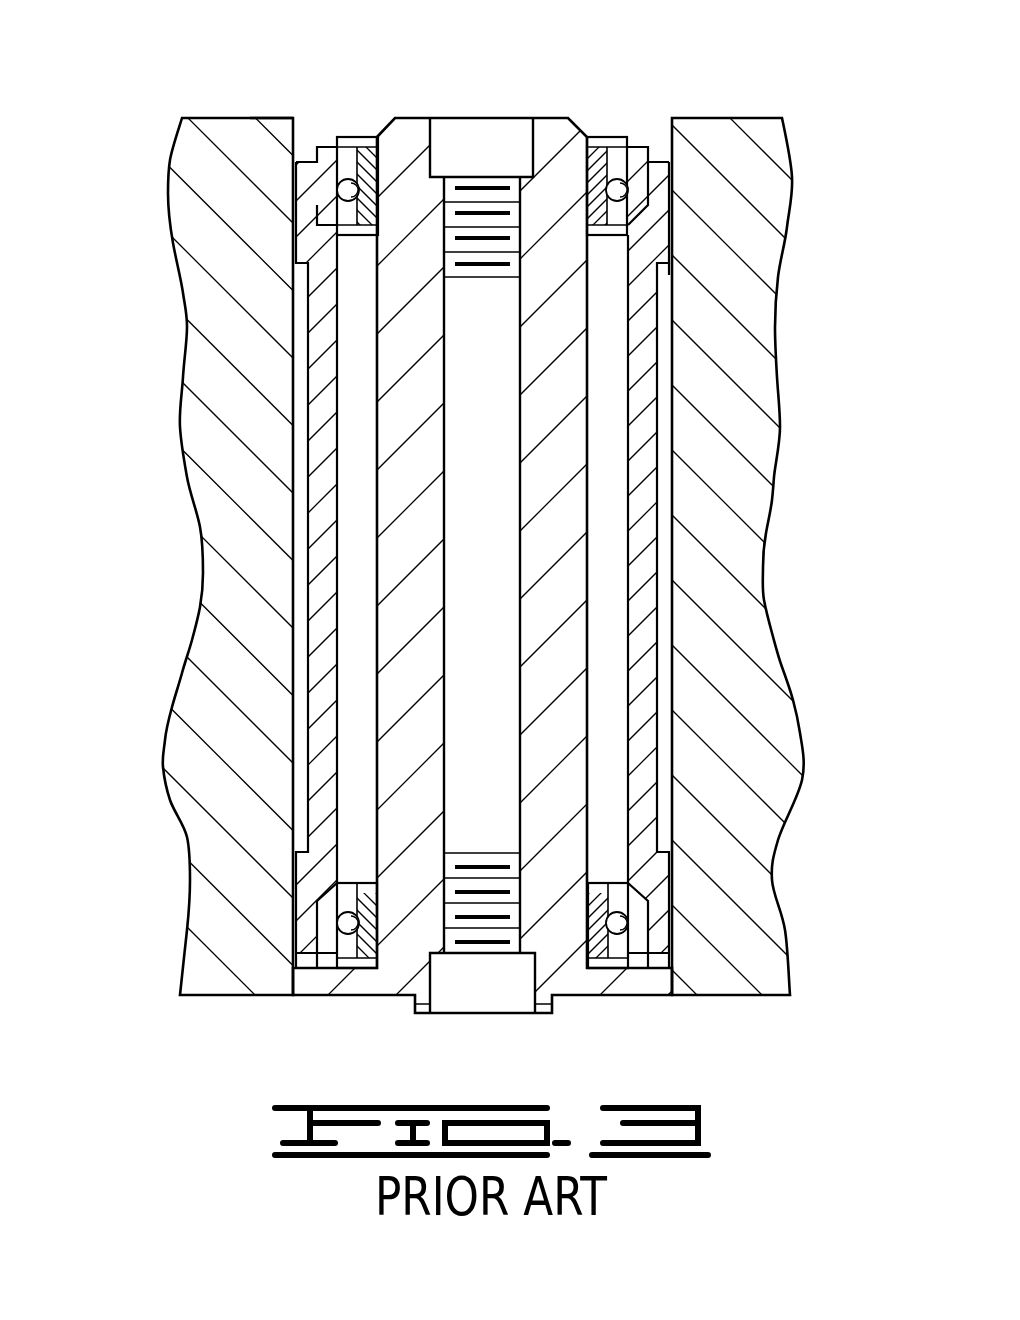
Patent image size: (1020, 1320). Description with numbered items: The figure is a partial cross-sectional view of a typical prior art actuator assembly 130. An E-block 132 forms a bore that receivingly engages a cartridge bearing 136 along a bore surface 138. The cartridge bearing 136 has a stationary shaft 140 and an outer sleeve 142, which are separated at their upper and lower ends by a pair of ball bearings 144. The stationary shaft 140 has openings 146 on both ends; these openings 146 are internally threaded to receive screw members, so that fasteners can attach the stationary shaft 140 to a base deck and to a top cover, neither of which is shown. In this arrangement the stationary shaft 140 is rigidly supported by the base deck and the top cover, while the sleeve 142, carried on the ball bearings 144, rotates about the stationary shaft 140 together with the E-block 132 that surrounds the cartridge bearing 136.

The prior art actuator assembly 130 is at (286, 37).
The E-block 132 is at (230, 798).
The cartridge bearing 136 is at (663, 368).
The bore surface 138 is at (673, 337).
The stationary shaft 140 is at (417, 118).
The outer sleeve 142 is at (640, 468).
The ball bearings 144 is at (320, 147).
The openings 146 is at (464, 138).